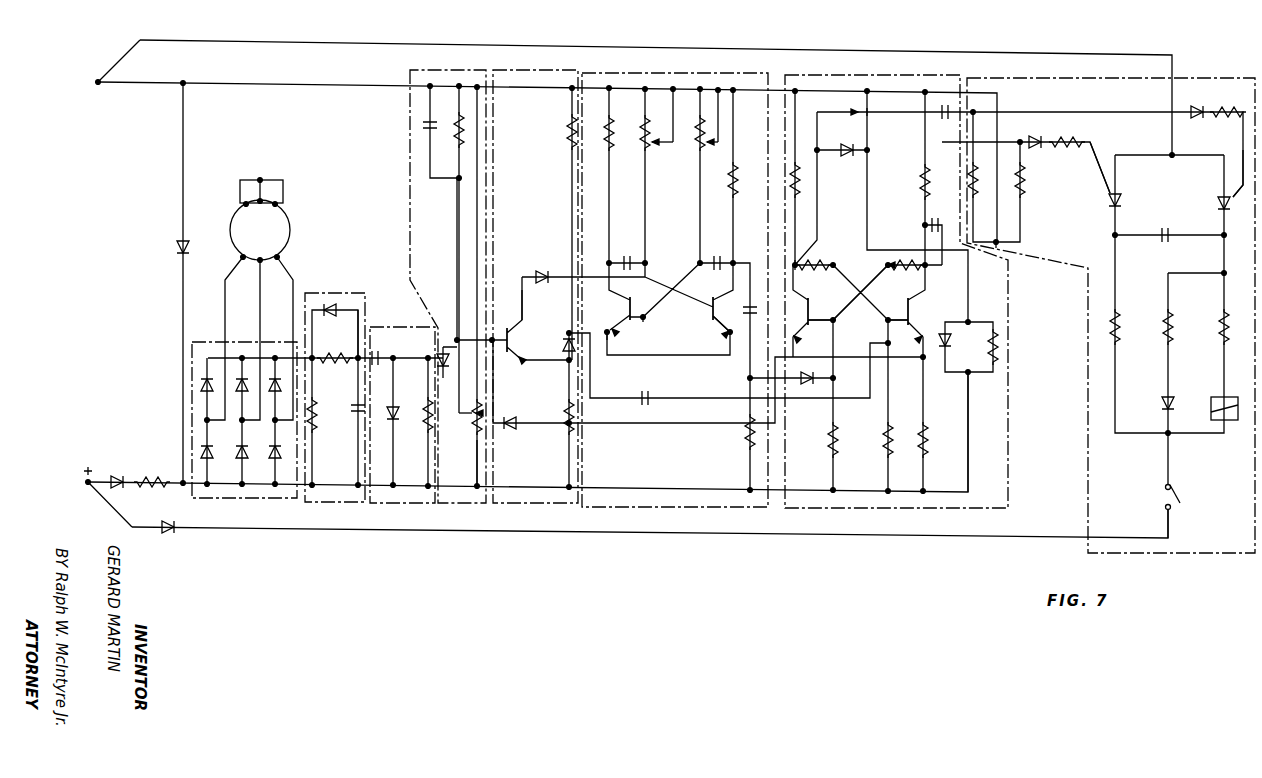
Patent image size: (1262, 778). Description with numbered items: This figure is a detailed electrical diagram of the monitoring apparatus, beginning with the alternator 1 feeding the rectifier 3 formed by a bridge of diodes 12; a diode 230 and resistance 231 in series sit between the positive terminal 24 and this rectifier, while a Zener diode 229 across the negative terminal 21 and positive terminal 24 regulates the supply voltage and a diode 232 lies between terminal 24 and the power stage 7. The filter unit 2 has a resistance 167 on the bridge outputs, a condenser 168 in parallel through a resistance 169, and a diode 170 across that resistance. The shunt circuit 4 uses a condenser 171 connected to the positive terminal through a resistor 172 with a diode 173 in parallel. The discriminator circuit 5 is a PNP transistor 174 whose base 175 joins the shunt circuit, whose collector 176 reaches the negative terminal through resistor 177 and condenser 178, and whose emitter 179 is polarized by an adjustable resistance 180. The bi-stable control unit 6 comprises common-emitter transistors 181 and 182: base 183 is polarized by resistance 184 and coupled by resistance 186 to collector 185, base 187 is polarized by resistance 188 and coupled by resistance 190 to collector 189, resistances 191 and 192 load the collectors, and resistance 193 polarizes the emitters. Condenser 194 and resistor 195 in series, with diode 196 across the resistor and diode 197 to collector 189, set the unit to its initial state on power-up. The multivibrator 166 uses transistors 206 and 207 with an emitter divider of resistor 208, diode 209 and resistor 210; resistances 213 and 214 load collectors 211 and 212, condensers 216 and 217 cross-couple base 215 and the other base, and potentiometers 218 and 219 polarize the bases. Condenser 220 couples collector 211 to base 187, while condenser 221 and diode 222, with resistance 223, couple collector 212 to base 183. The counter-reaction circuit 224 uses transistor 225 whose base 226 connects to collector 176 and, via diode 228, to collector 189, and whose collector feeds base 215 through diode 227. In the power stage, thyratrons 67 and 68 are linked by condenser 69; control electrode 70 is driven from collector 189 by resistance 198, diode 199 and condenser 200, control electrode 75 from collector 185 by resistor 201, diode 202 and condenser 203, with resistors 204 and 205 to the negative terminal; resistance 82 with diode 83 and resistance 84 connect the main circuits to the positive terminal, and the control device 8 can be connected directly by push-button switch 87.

The alternator 1 is at (290, 218).
The filter unit 2 is at (318, 510).
The rectifier 3 is at (208, 342).
The shunt circuit 4 is at (384, 510).
The discriminator circuit 5 is at (440, 510).
The bi-stable control unit 6 is at (805, 512).
The power circuit 7 is at (1178, 558).
The control device 8 is at (1211, 396).
The diodes 12 is at (282, 452).
The negative terminal 21 is at (98, 86).
The positive terminal 24 is at (88, 486).
The thyratron 67 is at (1218, 200).
The thyratron 68 is at (1120, 200).
The condenser 69 is at (1160, 232).
The control electrode 70 is at (1242, 164).
The control electrode 75 is at (1098, 171).
The resistance 82 is at (1172, 314).
The diode 83 is at (1160, 406).
The resistance 84 is at (1120, 310).
The switch 87 is at (1228, 314).
The multivibrator 166 is at (615, 510).
The resistance 167 is at (316, 396).
The condenser 168 is at (350, 410).
The resistance 169 is at (338, 350).
The diode 170 is at (334, 306).
The condenser 171 is at (378, 336).
The resistor 172 is at (424, 402).
The diode 173 is at (400, 418).
The transistor 174 is at (446, 306).
The base 175 is at (468, 447).
The collector 176 is at (446, 350).
The resistor 177 is at (456, 134).
The condenser 178 is at (416, 134).
The emitter 179 is at (446, 374).
The resistance 180 is at (470, 428).
The transistor 181 is at (812, 310).
The transistor 182 is at (890, 290).
The base 183 is at (838, 326).
The resistance 184 is at (854, 432).
The collector 185 is at (926, 300).
The resistance 186 is at (902, 272).
The base 187 is at (878, 324).
The resistance 188 is at (892, 428).
The collector 189 is at (808, 270).
The resistance 190 is at (803, 262).
The resistance 191 is at (922, 190).
The resistance 192 is at (740, 180).
The resistance 193 is at (928, 430).
The condenser 194 is at (870, 112).
The resistor 195 is at (950, 340).
The diode 196 is at (996, 355).
The diode 197 is at (847, 158).
The resistance 198 is at (1226, 108).
The diode 199 is at (1194, 108).
The condenser 200 is at (942, 106).
The resistor 201 is at (1064, 140).
The diode 202 is at (1031, 142).
The condenser 203 is at (925, 225).
The resistor 204 is at (978, 194).
The resistor 205 is at (1026, 190).
The transistor 206 is at (624, 338).
The transistor 207 is at (710, 334).
The resistor 208 is at (568, 134).
The diode 209 is at (564, 346).
The resistor 210 is at (564, 438).
The collector 211 is at (626, 306).
The collector 212 is at (710, 302).
The resistance 213 is at (614, 138).
The resistance 214 is at (788, 176).
The base 215 is at (650, 322).
The condenser 216 is at (718, 260).
The condenser 217 is at (622, 262).
The potentiometer 218 is at (700, 157).
The potentiometer 219 is at (646, 139).
The condenser 220 is at (660, 392).
The condenser 221 is at (740, 320).
The diode 222 is at (806, 388).
The resistance 223 is at (743, 440).
The circuit 224 is at (502, 510).
The transistor 225 is at (526, 326).
The base 226 is at (496, 334).
The diode 227 is at (542, 270).
The diode 228 is at (510, 420).
The Zener diode 229 is at (176, 250).
The diode 230 is at (116, 476).
The resistance 231 is at (150, 486).
The diode 232 is at (168, 536).